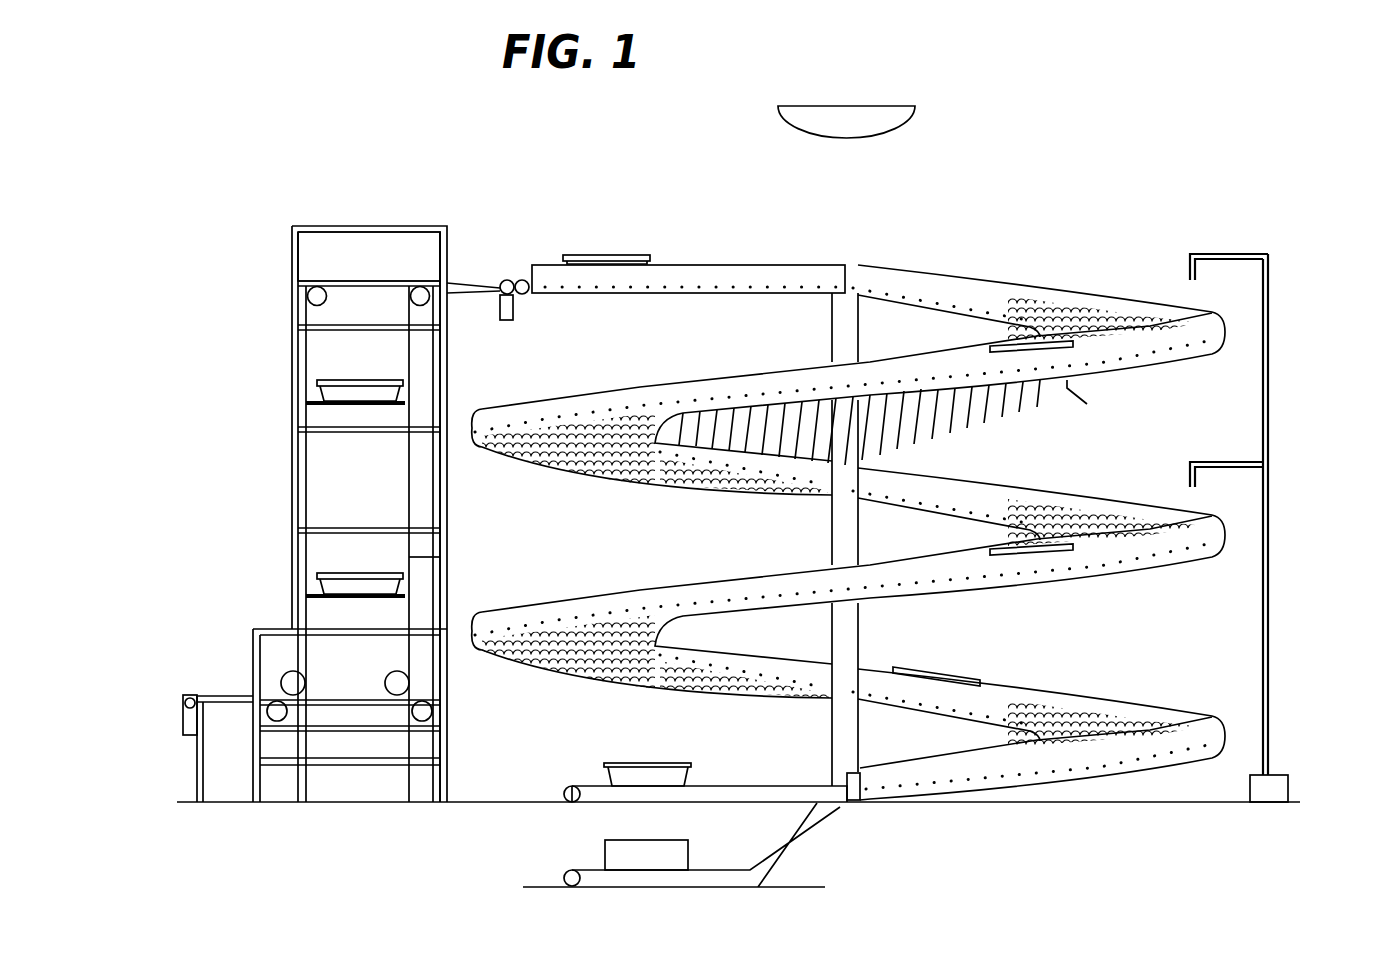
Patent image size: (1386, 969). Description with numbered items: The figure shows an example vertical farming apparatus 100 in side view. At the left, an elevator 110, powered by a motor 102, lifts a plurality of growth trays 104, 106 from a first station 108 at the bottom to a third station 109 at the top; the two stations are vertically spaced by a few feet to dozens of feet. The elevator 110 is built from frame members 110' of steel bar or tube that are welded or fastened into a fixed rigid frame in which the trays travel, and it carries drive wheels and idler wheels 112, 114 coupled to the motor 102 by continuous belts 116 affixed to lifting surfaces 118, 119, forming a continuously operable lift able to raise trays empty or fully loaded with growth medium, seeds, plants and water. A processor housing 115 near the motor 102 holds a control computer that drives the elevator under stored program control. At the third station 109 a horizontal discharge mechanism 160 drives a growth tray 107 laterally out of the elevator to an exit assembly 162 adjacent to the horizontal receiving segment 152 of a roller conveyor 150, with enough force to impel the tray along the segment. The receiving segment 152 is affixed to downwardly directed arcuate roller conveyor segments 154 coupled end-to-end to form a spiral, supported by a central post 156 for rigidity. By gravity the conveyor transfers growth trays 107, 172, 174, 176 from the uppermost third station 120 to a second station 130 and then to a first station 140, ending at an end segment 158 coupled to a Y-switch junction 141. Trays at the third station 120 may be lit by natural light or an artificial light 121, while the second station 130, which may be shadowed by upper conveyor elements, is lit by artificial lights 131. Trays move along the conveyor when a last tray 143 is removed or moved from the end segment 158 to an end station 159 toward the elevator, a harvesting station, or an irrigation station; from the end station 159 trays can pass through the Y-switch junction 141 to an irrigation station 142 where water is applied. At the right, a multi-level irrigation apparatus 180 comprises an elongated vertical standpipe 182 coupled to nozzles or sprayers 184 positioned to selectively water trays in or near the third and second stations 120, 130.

The vertical farming apparatus 100 is at (531, 183).
The motor 102 is at (185, 700).
The growth tray 104 is at (330, 586).
The growth tray 106 is at (330, 394).
The growth tray 107 is at (630, 255).
The first station 108 is at (343, 692).
The third station 109 is at (350, 280).
The elevator 110 is at (350, 479).
The frame members 110' is at (434, 479).
The drive wheels and idler wheels 112 is at (276, 716).
The drive wheels and idler wheels 114 is at (432, 712).
The processor housing 115 is at (225, 765).
The continuous belts 116 is at (437, 553).
The lifting surface 118 is at (345, 597).
The lifting surface 119 is at (345, 405).
The third station 120 is at (1142, 268).
The artificial light 121 is at (893, 122).
The second station 130 is at (1142, 470).
The artificial light 131 is at (1045, 420).
The first station 140 is at (1142, 665).
The Y-switch junction 141 is at (803, 757).
The irrigation station 142 is at (605, 855).
The growth tray 143 is at (622, 763).
The roller conveyor 150 is at (990, 820).
The horizontal receiving segment 152 is at (810, 272).
The arcuate roller conveyor segments 154 is at (1058, 290).
The central post 156 is at (845, 335).
The end segment 158 is at (853, 800).
The end station 159 is at (733, 788).
The horizontal discharge mechanism 160 is at (307, 295).
The exit assembly 162 is at (483, 282).
The growth tray 172 is at (1000, 335).
The growth tray 174 is at (1000, 540).
The growth tray 176 is at (923, 675).
The multi-level irrigation apparatus 180 is at (1250, 790).
The elongated vertical standpipe 182 is at (1270, 588).
The nozzles or sprayers 184 is at (1217, 462).